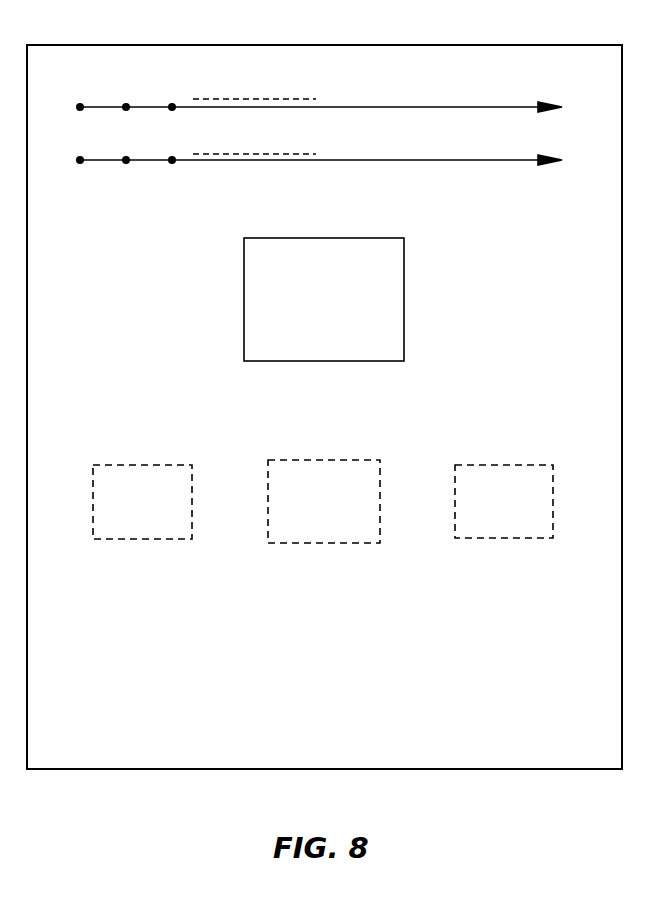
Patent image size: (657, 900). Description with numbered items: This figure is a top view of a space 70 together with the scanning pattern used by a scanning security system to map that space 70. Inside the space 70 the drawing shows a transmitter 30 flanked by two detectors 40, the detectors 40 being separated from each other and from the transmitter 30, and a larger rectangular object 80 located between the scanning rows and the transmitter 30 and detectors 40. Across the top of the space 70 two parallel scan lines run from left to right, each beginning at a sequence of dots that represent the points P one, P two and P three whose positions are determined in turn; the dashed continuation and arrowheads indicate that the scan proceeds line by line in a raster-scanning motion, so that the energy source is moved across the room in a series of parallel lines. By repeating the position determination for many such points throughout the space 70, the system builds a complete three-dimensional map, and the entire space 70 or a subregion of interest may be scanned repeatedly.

The space 70 is at (586, 144).
The object 80 is at (334, 311).
The detector 40 is at (152, 511).
The transmitter 30 is at (335, 512).